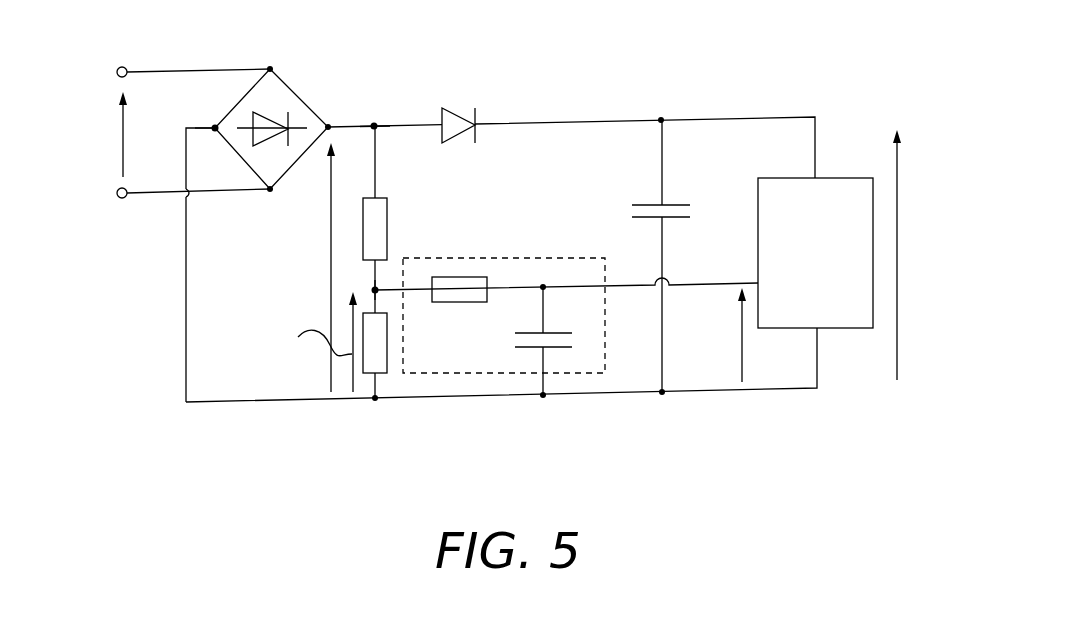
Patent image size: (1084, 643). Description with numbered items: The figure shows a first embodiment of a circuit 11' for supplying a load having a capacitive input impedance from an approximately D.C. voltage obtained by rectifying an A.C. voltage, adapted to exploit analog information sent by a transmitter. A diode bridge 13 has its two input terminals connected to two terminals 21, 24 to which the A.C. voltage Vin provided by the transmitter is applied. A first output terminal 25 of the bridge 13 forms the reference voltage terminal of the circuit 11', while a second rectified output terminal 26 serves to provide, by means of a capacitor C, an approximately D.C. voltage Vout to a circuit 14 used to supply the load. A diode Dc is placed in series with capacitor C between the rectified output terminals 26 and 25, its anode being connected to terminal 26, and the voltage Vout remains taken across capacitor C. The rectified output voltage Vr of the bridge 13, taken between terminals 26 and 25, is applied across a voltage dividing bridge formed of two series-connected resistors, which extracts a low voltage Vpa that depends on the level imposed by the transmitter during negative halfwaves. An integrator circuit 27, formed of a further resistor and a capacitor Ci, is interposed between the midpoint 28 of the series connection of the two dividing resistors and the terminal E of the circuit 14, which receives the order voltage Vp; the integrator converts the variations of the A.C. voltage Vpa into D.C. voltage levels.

The load supply circuit 11' is at (521, 216).
The diode bridge 13 is at (288, 81).
The load supply circuit 14 is at (840, 177).
The terminal of application of A.C. voltage 21 is at (122, 67).
The terminal of application of A.C. voltage 24 is at (122, 199).
The first output terminal 25 is at (208, 128).
The second rectified output terminal 26 is at (352, 127).
The integrator circuit 27 is at (465, 257).
The midpoint 28 is at (373, 289).